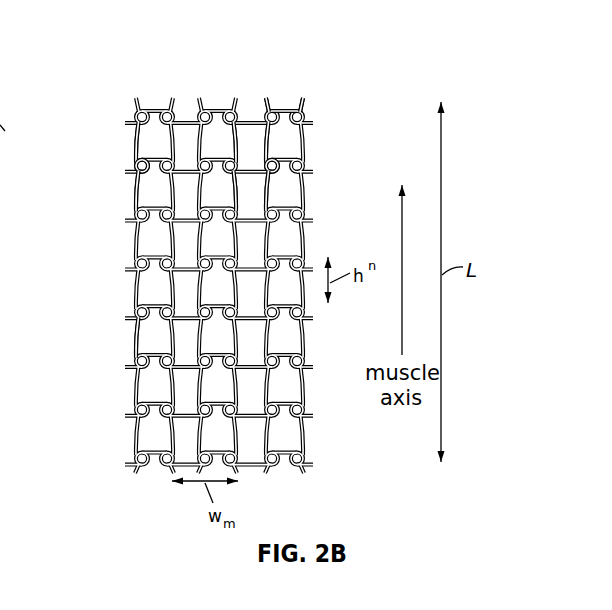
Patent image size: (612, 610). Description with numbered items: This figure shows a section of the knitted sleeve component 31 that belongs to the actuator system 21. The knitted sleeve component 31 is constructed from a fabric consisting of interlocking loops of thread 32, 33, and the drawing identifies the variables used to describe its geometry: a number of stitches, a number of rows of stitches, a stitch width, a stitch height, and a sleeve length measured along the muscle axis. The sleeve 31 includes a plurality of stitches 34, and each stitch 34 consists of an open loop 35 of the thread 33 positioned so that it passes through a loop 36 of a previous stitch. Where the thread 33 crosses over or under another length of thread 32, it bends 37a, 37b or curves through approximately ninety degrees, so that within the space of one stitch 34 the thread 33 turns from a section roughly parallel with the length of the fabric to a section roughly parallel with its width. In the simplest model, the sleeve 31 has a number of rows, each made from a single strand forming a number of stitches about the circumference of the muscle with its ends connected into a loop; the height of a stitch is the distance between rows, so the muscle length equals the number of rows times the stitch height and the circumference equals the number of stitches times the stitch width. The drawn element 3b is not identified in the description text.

The actuator system 21 is at (106, 69).
The knitted sleeve component 31 is at (138, 195).
The thread 32 is at (135, 143).
The thread 33 is at (135, 167).
The stitch 34 is at (286, 106).
The open loop 35 is at (257, 192).
The loop of a previous stitch 36 is at (262, 145).
The bend 37a is at (233, 153).
The bend 37b is at (263, 160).
The mesh fiber 3b is at (124, 329).